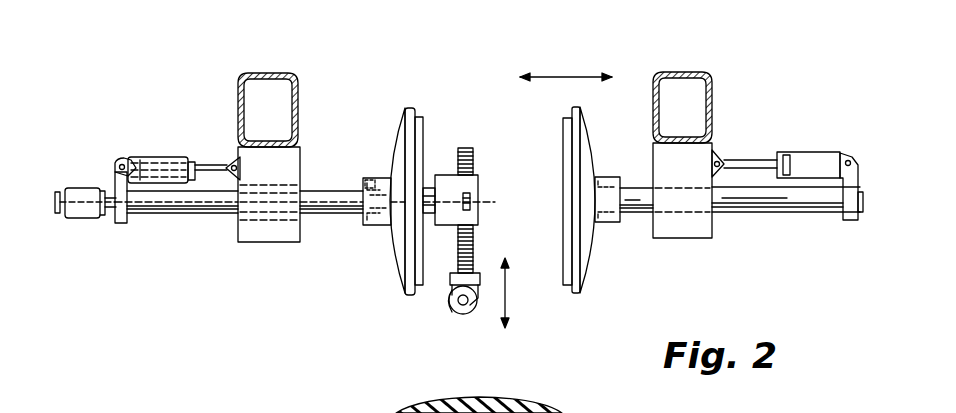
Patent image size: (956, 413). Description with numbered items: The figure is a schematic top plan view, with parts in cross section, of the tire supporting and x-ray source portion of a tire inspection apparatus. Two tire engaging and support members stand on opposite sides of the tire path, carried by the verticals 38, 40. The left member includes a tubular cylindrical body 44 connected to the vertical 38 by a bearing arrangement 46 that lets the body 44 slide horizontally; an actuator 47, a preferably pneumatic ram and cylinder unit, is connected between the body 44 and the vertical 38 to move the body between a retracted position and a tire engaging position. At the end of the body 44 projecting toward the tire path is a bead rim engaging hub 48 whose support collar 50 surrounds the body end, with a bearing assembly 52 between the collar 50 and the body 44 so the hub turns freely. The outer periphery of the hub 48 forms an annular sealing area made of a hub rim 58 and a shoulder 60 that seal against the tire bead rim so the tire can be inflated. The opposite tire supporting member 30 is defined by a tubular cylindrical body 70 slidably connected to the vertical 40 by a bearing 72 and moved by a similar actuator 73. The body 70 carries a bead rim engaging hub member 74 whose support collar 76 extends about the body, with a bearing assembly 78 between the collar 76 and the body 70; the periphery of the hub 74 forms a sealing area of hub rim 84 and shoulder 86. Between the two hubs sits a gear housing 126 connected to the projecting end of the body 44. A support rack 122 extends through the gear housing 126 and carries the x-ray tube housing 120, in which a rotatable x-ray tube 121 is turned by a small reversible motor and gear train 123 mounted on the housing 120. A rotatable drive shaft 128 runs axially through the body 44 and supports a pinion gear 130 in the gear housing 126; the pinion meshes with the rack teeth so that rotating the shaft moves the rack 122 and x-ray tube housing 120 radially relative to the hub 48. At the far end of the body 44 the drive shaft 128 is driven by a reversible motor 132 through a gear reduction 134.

The tire engaging and support member 30 is at (728, 213).
The vertical 38 is at (239, 97).
The vertical 40 is at (672, 72).
The tubular cylindrical body 44 is at (175, 214).
The bearing arrangement 46 is at (252, 233).
The actuator 47 is at (157, 157).
The bead rim engaging hub 48 is at (392, 147).
The support collar 50 is at (372, 226).
The bearing assembly 52 is at (375, 178).
The hub rim 58 is at (410, 108).
The shoulder 60 is at (419, 116).
The tubular cylindrical body 70 is at (783, 213).
The bearing 72 is at (677, 234).
The actuator 73 is at (802, 152).
The bead rim engaging hub member 74 is at (576, 212).
The support collar 76 is at (605, 177).
The bearing assembly 78 is at (603, 223).
The hub rim 84 is at (577, 107).
The shoulder 86 is at (566, 117).
The x-ray tube housing 120 is at (453, 314).
The x-ray tube 121 is at (471, 305).
The support rack 122 is at (461, 250).
The reversible electric motor and gear train 123 is at (456, 289).
The gear housing 126 is at (480, 178).
The drive shaft 128 is at (430, 177).
The pinion gear 130 is at (470, 201).
The reversible motor 132 is at (87, 219).
The gear reduction 134 is at (57, 191).